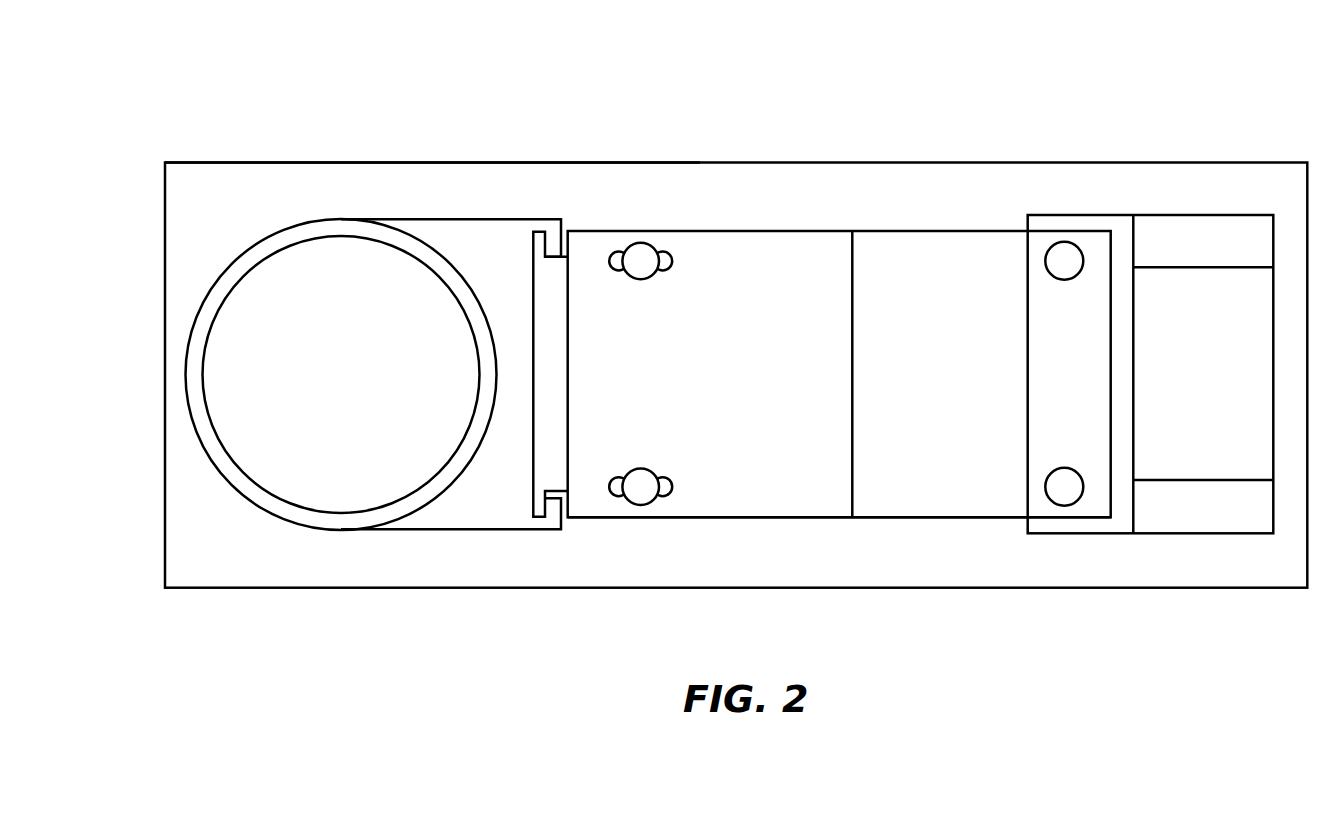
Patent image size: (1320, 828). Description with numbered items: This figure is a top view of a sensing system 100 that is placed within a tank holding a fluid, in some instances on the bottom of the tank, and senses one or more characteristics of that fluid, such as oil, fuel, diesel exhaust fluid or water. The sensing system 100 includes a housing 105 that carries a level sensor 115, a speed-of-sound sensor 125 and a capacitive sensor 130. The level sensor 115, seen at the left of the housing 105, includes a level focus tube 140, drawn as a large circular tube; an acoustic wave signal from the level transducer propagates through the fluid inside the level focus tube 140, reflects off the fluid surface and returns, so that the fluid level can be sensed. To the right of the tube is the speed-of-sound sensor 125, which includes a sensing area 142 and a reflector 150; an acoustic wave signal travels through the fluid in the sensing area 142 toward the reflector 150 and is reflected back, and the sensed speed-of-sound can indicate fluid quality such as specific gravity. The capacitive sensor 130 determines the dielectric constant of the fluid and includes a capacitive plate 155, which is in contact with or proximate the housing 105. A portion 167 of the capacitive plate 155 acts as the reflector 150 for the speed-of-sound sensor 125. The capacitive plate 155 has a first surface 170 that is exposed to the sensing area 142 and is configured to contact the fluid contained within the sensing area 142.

The sensing system 100 is at (1112, 86).
The housing 105 is at (165, 471).
The level sensor 115 is at (280, 165).
The level focus tube 140 is at (205, 293).
The reflector 150 is at (533, 248).
The portion of the capacitive plate 167 is at (454, 374).
The capacitive sensor 130 is at (589, 246).
The first surface 170 is at (742, 505).
The sensing area 142 is at (735, 246).
The capacitive plate 155 is at (678, 240).
The speed-of-sound sensor 125 is at (910, 246).